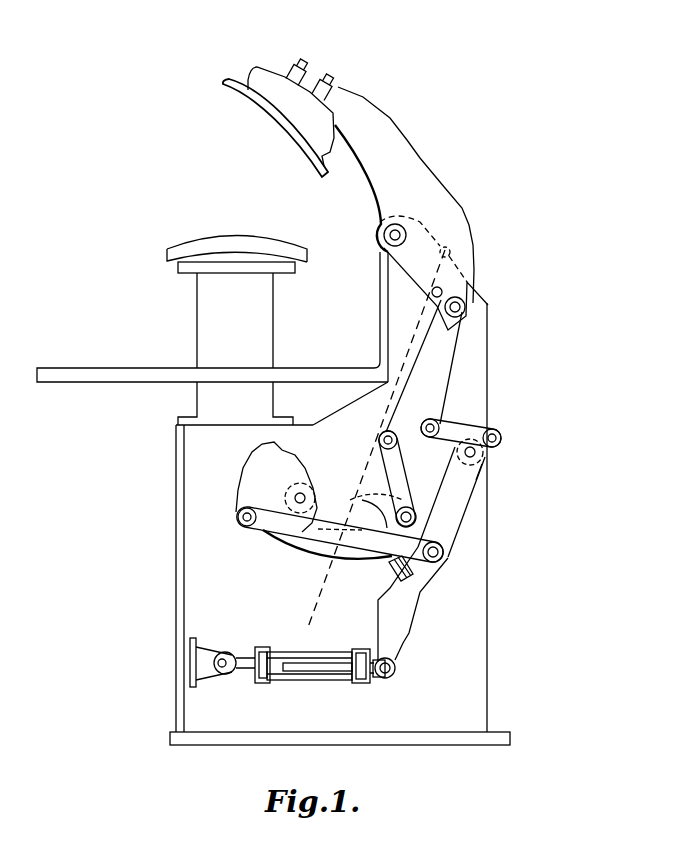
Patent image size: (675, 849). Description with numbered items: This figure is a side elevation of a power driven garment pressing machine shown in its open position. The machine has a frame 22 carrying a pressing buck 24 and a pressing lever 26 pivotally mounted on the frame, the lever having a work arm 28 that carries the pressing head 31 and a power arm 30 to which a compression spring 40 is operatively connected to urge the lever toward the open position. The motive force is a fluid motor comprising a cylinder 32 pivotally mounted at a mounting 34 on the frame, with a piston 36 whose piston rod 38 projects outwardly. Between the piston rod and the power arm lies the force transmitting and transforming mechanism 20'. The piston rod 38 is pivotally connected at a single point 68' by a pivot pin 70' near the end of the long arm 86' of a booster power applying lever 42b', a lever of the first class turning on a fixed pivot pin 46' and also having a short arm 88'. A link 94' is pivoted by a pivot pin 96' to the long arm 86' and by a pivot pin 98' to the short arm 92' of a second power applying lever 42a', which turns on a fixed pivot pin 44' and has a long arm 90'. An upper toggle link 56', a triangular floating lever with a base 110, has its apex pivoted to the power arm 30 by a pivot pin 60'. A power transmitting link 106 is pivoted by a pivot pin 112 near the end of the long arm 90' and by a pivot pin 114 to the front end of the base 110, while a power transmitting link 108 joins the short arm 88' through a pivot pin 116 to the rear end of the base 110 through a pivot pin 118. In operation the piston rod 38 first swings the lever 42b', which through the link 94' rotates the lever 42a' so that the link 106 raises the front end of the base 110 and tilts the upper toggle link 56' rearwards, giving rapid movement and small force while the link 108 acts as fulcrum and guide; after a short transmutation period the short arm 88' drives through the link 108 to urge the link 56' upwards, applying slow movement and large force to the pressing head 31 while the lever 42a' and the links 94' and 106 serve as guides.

The pressing head 31 is at (247, 88).
The work arm 28 is at (362, 102).
The pressing lever 26 is at (420, 160).
The power arm 30 is at (465, 242).
The pressing buck 24 is at (200, 263).
The frame 22 is at (493, 555).
The force transmitting and transforming mechanism 20' is at (515, 366).
The pivot pin 60' is at (454, 273).
The upper toggle link 56' is at (481, 368).
The base 110 is at (416, 444).
The compression spring 40 is at (362, 480).
The pivot pin 118 is at (445, 418).
The power transmitting link 108 is at (470, 428).
The pivot pin 116 is at (501, 438).
The short arm 88' is at (504, 452).
The booster power applying lever 42b' is at (481, 502).
The fixed pivot pin 46' is at (500, 474).
The pivot pin 96' is at (453, 567).
The long arm 86' is at (422, 604).
The pivotal connection point 68' is at (409, 660).
The pivot pin 70' is at (406, 676).
The pivot pin 114 is at (379, 440).
The power transmitting link 106 is at (415, 471).
The pivot pin 112 is at (412, 512).
The fixed pivot pin 44' is at (316, 495).
The short arm 92' is at (283, 487).
The long arm 90' is at (376, 504).
The pivot pin 98' is at (242, 532).
The link 94' is at (340, 545).
The power applying lever 42a' is at (338, 561).
The piston 36 is at (268, 656).
The cylinder 32 is at (302, 677).
The piston rod 38 is at (343, 668).
The pivotal mounting 34 is at (223, 668).